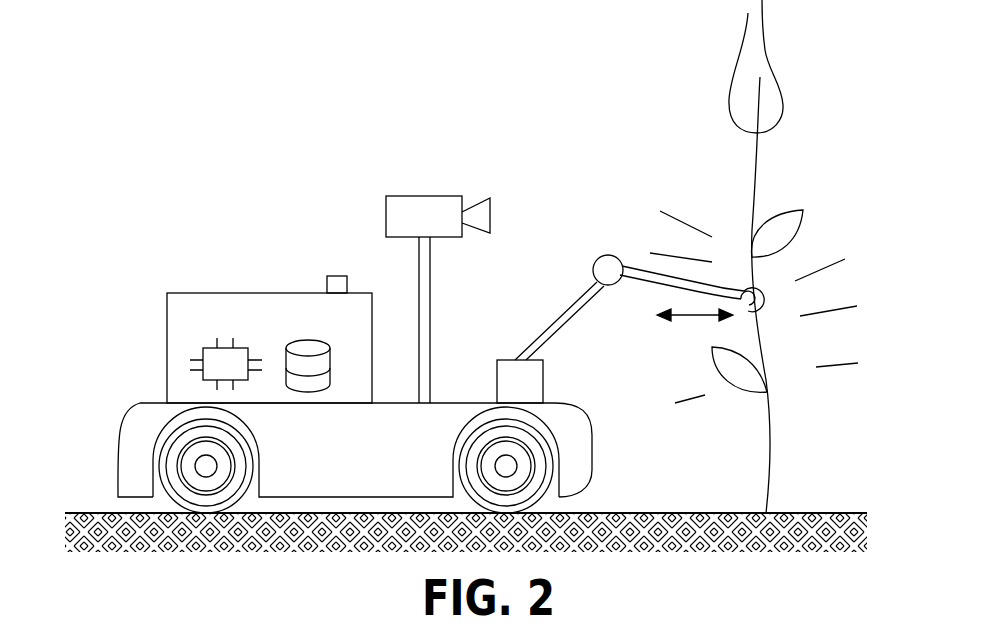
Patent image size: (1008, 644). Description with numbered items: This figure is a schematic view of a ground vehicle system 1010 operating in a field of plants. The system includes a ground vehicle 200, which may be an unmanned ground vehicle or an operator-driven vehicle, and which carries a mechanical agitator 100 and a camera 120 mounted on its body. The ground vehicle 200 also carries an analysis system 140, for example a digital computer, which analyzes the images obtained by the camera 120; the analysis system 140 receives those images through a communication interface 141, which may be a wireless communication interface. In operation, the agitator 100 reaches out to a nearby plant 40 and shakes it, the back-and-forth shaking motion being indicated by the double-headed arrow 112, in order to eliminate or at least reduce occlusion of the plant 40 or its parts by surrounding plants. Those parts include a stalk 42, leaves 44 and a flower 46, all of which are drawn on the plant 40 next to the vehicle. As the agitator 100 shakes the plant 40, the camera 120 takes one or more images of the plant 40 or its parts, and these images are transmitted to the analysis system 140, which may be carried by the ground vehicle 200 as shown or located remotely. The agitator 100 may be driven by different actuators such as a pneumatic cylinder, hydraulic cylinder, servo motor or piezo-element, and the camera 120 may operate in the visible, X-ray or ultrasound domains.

The ground vehicle system 1010 is at (150, 250).
The ground vehicle 200 is at (130, 410).
The analysis system 140 is at (268, 282).
The communication interface 141 is at (338, 276).
The camera 120 is at (432, 186).
The mechanical agitator 100 is at (555, 306).
The end effector motion direction 112 is at (694, 320).
The plant 40 is at (764, 172).
The stalk 42 is at (771, 434).
The leaves 44 is at (806, 213).
The flower 46 is at (779, 86).